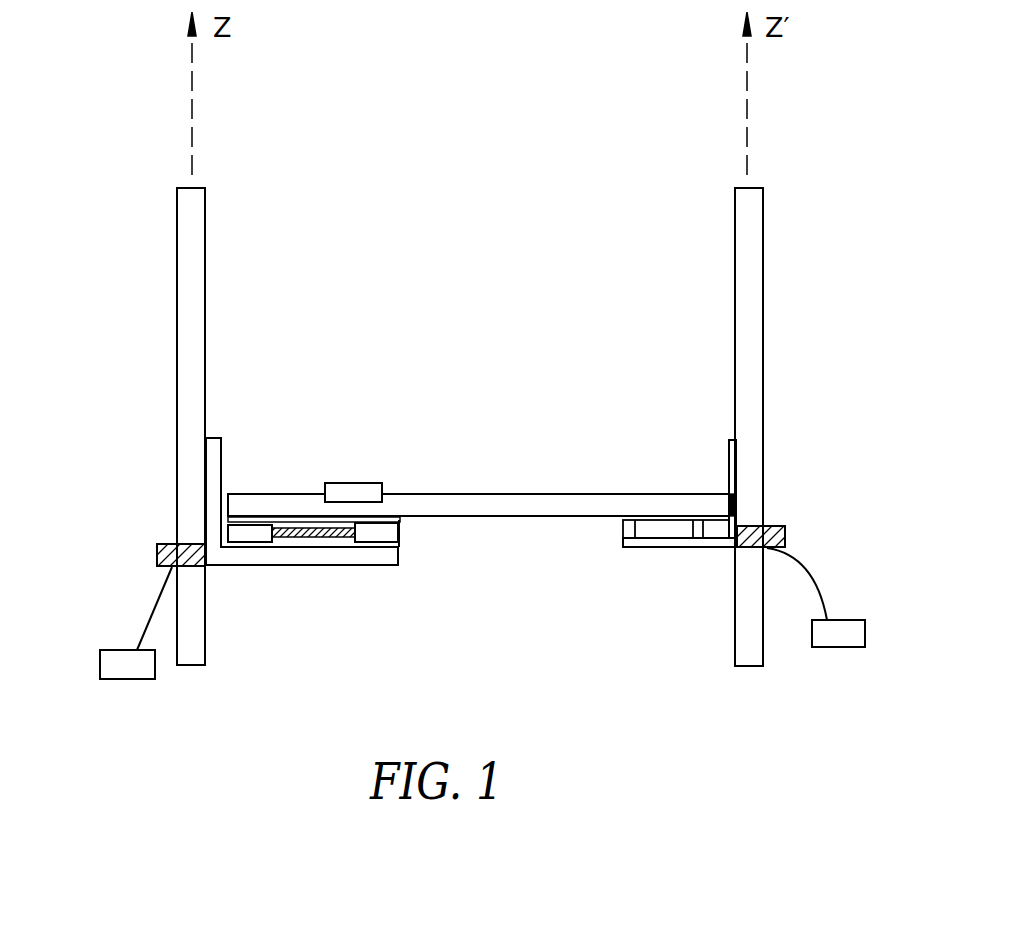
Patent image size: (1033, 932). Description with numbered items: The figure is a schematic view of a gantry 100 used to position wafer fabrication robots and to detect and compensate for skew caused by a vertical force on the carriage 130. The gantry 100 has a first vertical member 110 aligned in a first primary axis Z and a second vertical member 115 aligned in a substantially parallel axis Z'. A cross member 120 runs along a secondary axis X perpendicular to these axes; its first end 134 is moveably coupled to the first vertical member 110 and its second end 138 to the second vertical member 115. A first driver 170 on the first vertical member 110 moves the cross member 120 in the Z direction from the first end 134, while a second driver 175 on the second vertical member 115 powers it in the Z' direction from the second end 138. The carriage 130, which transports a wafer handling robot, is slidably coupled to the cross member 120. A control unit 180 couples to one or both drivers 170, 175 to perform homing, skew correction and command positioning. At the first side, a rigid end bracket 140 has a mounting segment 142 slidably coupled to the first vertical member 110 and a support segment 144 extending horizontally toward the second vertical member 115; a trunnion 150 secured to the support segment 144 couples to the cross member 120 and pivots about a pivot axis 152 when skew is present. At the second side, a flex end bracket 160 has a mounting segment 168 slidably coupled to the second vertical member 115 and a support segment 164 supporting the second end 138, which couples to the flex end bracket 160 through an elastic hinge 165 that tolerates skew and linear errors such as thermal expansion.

The gantry 100 is at (826, 146).
The first vertical member 110 is at (210, 330).
The second vertical member 115 is at (731, 340).
The cross member 120 is at (497, 507).
The carriage 130 is at (365, 492).
The first end 134 is at (226, 506).
The second end 138 is at (729, 488).
The rigid end bracket 140 is at (274, 546).
The mounting segment 142 is at (212, 478).
The support segment 144 is at (363, 558).
The trunnion 150 is at (236, 533).
The pivot axis 152 is at (317, 540).
The flex end bracket 160 is at (652, 577).
The support segment 164 is at (633, 549).
The elastic hinge 165 is at (728, 548).
The mounting segment 168 is at (733, 462).
The first driver 170 is at (156, 567).
The second driver 175 is at (785, 530).
The control unit 180 is at (100, 652).